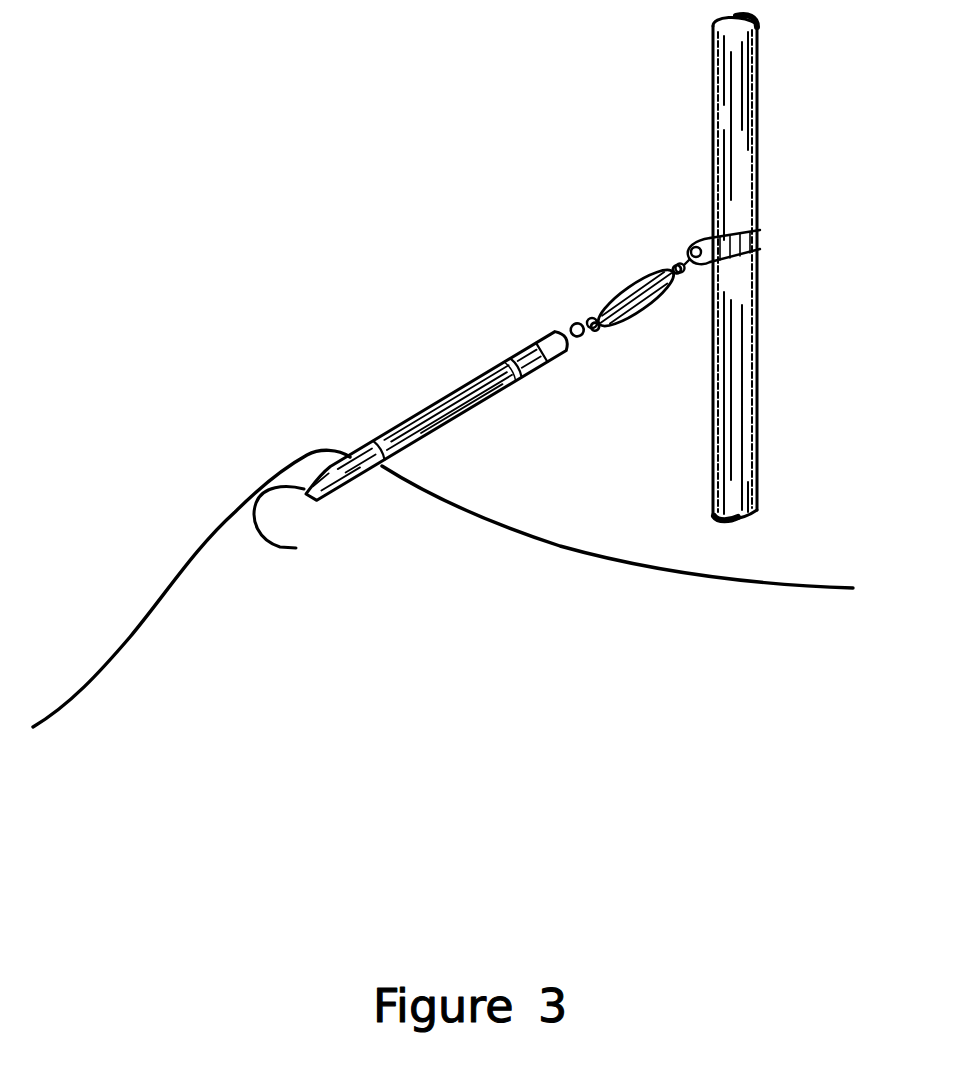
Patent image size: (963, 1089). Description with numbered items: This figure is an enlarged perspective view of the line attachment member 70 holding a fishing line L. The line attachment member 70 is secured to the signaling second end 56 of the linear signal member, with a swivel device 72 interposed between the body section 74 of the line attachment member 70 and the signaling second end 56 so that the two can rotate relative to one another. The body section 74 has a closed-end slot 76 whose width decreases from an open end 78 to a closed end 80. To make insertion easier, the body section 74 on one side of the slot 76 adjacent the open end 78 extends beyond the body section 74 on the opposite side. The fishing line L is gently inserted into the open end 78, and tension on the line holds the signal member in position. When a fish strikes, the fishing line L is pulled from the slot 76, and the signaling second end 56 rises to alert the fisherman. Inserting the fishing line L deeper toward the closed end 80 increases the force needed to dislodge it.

The signaling second end 56 is at (733, 60).
The line attachment member 70 is at (372, 270).
The swivel device 72 is at (647, 297).
The body section 74 is at (452, 420).
The closed-end slot 76 is at (377, 453).
The open end 78 is at (309, 532).
The closed end 80 is at (510, 372).
The fishing line L is at (121, 645).